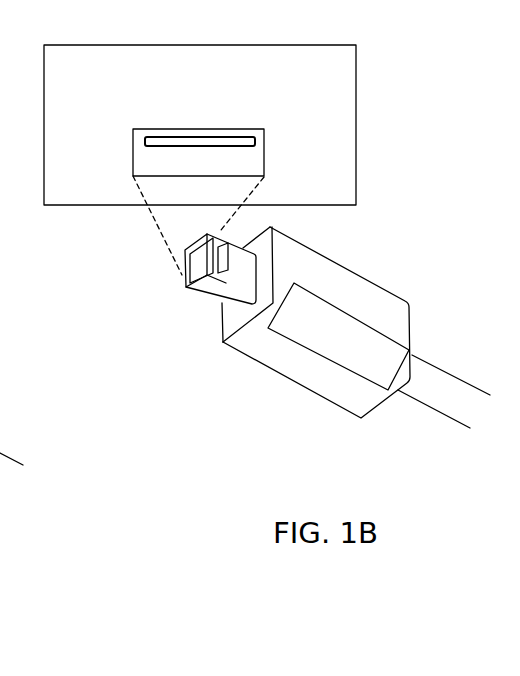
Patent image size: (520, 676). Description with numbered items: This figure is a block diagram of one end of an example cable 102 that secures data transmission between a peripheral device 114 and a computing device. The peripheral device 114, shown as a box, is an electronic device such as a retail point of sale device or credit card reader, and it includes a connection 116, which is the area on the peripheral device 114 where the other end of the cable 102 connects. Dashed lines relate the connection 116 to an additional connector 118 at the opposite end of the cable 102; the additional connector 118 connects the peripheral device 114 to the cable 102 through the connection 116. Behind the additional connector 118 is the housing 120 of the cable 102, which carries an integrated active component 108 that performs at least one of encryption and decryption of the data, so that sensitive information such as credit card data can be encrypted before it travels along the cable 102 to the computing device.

The cable 102 is at (445, 380).
The active component 108 is at (307, 305).
The peripheral device 114 is at (356, 63).
The connection 116 is at (265, 140).
The additional connector 118 is at (232, 283).
The housing 120 is at (278, 254).